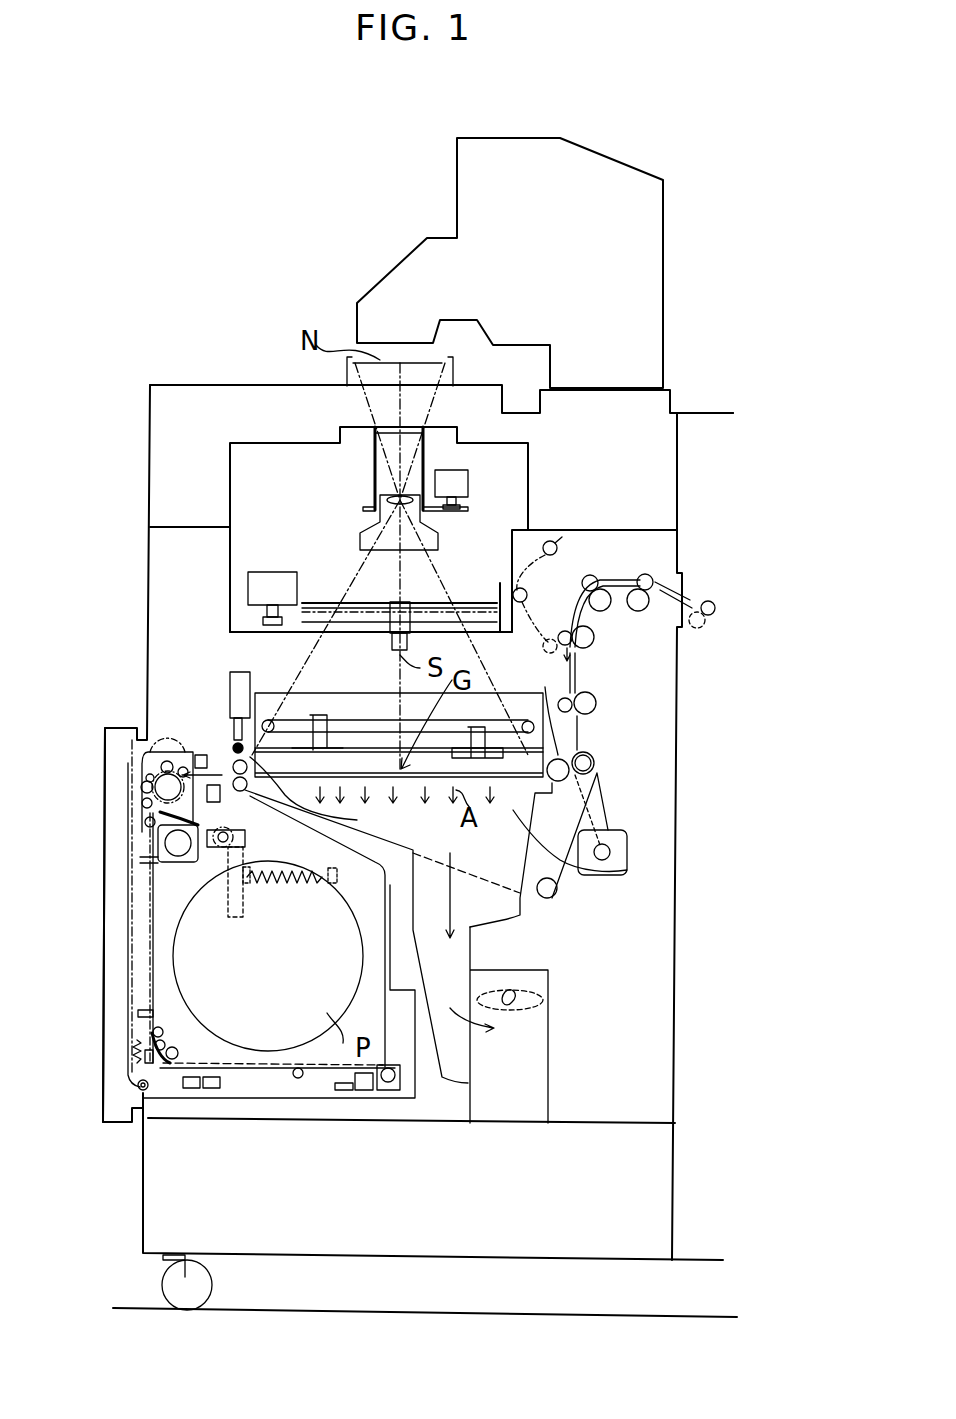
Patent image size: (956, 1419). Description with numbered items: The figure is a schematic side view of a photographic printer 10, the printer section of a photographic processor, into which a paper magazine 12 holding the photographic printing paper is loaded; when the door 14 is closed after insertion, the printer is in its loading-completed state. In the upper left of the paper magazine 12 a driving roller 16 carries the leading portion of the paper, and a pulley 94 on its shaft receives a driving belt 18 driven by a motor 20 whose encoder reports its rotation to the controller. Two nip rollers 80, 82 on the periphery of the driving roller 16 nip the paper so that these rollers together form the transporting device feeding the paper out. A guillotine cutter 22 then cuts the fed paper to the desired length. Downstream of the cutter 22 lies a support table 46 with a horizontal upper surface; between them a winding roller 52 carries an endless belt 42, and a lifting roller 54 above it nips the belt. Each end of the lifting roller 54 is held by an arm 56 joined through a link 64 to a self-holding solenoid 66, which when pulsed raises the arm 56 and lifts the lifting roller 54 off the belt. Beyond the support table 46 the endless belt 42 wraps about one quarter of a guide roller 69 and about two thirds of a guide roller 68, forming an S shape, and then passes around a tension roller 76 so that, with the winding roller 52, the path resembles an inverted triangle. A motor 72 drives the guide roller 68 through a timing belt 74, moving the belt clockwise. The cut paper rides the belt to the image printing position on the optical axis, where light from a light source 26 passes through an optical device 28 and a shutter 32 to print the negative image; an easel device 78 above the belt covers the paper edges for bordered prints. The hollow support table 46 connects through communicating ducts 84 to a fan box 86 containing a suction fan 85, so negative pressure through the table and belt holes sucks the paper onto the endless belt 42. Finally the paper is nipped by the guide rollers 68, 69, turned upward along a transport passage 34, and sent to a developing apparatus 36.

The photographic printer 10 is at (230, 308).
The paper magazine 12 is at (255, 1082).
The door 14 is at (102, 1068).
The driving roller 16 is at (155, 795).
The driving belt 18 is at (168, 712).
The motor 20 is at (140, 888).
The guillotine cutter 22 is at (220, 757).
The light source 26 is at (663, 290).
The optical device 28 is at (375, 532).
The shutter 32 is at (465, 598).
The transport passage 34 is at (591, 674).
The developing apparatus 36 is at (763, 689).
The endless belt 42 is at (480, 903).
The support table 46 is at (627, 870).
The winding roller 52 is at (212, 788).
The lifting roller 54 is at (405, 810).
The arm 56 is at (262, 723).
The link 64 is at (250, 753).
The solenoid 66 is at (232, 672).
The guide roller 68 is at (597, 758).
The guide roller 69 is at (566, 652).
The motor 72 is at (628, 852).
The timing belt 74 is at (603, 808).
The tension roller 76 is at (553, 903).
The easel device 78 is at (345, 693).
The nip roller 80 is at (147, 786).
The nip roller 82 is at (147, 765).
The communicating duct 84 is at (440, 948).
The suction fan 85 is at (548, 1005).
The fan box 86 is at (537, 1047).
The pulley 94 is at (125, 835).